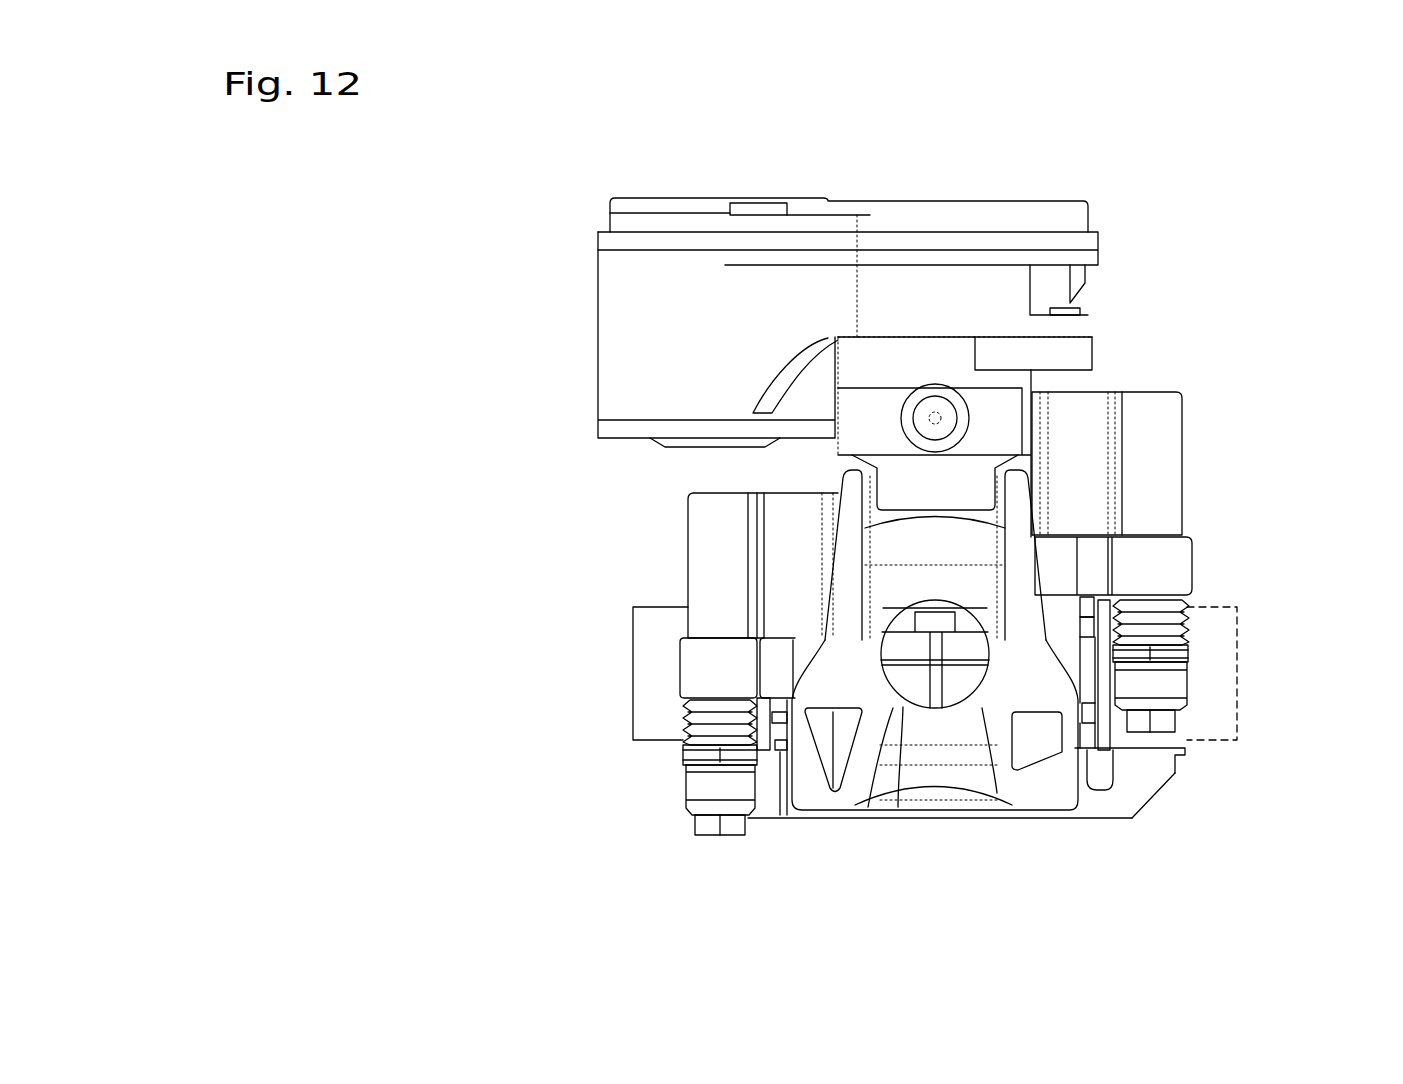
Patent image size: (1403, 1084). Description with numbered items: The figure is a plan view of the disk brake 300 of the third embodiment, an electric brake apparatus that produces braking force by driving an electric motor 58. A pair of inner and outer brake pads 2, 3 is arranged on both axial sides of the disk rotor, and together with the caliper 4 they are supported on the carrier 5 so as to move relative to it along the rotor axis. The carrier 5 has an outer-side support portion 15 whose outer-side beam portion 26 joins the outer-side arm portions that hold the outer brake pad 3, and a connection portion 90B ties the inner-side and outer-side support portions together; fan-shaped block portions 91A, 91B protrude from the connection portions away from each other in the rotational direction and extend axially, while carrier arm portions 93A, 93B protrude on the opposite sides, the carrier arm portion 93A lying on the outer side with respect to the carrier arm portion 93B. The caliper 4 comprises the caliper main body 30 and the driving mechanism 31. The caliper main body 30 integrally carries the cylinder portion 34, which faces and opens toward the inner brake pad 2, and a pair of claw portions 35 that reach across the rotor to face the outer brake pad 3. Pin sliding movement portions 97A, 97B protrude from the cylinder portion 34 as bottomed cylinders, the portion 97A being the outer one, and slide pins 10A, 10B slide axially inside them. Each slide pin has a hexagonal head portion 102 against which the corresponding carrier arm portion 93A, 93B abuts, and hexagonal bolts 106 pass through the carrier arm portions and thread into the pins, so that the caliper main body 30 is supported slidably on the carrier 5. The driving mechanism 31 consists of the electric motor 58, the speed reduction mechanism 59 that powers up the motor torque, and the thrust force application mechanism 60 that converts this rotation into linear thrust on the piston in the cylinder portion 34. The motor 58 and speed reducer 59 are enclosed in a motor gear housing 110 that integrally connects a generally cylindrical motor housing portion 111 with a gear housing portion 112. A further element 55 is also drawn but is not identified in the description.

The disk brake 300 is at (1255, 218).
The inner brake pad 2 is at (885, 712).
The outer brake pad 3 is at (905, 655).
The caliper 4 is at (908, 188).
The carrier 5 is at (1152, 828).
The outer-side support portion 15 is at (932, 834).
The outer-side beam portion 26 is at (983, 812).
The caliper main body 30 is at (1070, 448).
The driving mechanism 31 is at (800, 234).
The cylinder portion 34 is at (990, 418).
The claw portion 35 is at (815, 812).
The spring 55 is at (688, 708).
The electric motor 58 is at (625, 320).
The speed reduction mechanism 59 is at (935, 298).
The thrust force application mechanism 60 is at (975, 397).
The connection portion 90B is at (1183, 745).
The block portion 91A is at (645, 663).
The block portion 91B is at (1225, 672).
The carrier arm portion 93A is at (690, 782).
The carrier arm portion 93B is at (1172, 683).
The pin sliding movement portion 97A is at (693, 537).
The pin sliding movement portion 97B is at (1165, 437).
The slide pin 10A is at (703, 567).
The slide pin 10B is at (1165, 490).
The hexagonal head portion 102 is at (685, 752).
The hexagonal bolt 106 is at (700, 822).
The motor gear housing 110 is at (1050, 198).
The motor housing portion 111 is at (682, 278).
The gear housing portion 112 is at (980, 285).